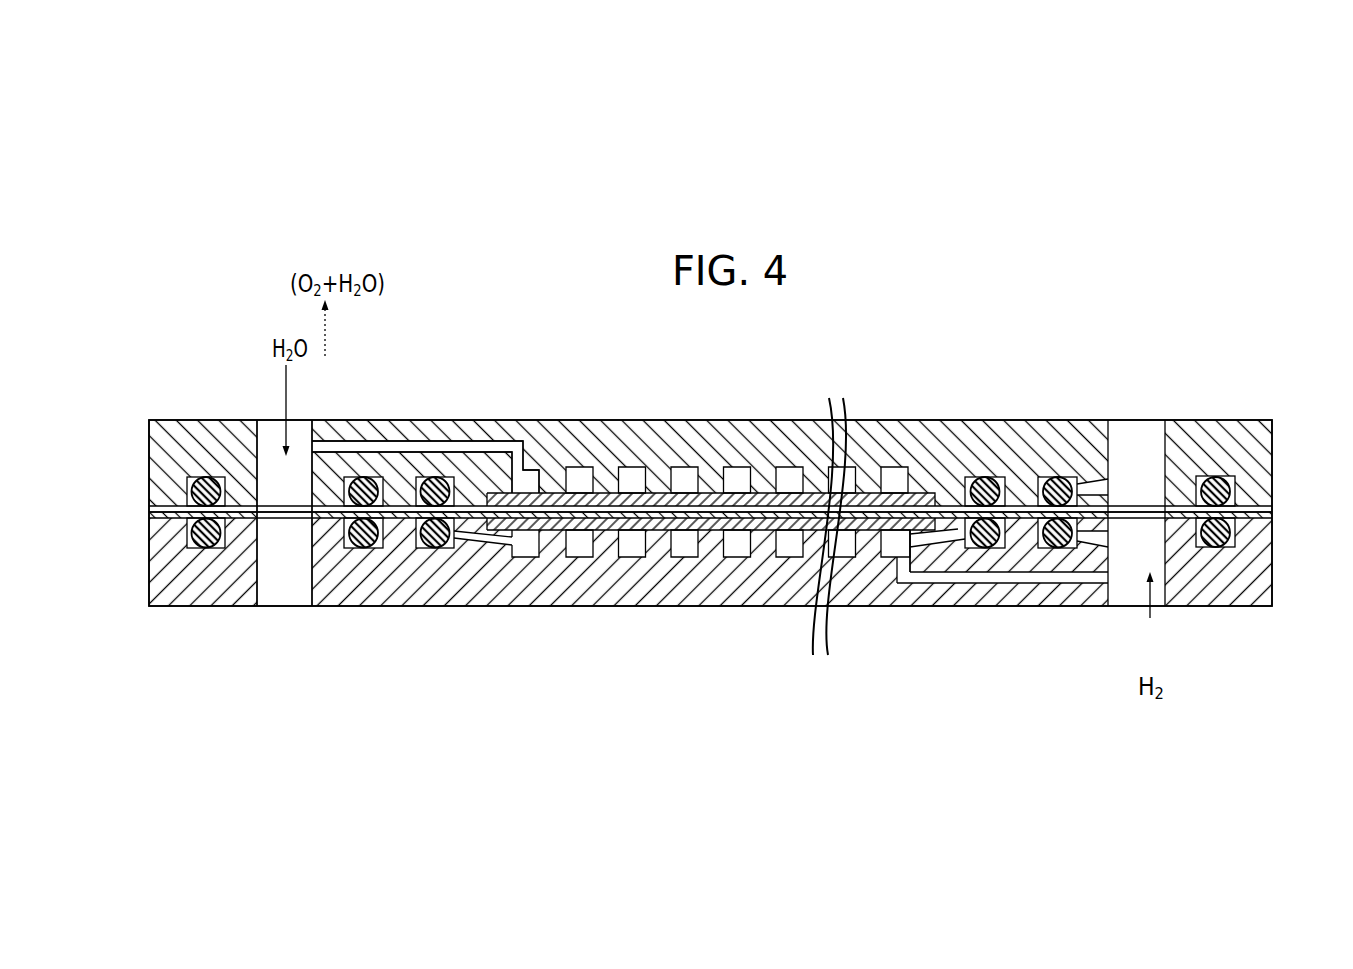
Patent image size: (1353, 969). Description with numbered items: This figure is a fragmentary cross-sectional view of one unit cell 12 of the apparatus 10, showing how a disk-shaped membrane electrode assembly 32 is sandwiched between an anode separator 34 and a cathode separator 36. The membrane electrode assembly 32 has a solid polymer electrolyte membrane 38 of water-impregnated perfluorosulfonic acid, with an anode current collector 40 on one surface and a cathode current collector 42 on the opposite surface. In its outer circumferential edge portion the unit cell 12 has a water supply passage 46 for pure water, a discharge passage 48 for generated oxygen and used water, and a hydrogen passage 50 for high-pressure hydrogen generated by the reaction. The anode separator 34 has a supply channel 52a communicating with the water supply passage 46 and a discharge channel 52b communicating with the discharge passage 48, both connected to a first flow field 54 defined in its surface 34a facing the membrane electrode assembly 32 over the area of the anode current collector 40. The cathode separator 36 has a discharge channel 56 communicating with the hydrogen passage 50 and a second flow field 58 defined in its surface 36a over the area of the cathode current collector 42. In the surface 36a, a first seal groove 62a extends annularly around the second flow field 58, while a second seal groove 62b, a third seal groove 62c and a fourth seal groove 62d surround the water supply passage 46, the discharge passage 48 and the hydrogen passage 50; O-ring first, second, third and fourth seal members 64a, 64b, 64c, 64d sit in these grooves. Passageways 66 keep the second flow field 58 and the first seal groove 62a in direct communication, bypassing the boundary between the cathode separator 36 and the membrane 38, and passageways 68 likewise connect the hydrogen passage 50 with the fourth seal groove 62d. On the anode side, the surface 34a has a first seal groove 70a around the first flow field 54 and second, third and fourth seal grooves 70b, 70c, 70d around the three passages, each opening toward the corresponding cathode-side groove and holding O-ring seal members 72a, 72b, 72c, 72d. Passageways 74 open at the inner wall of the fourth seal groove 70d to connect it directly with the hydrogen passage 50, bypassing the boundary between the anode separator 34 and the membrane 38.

The water electrolysis system 10 is at (1287, 277).
The unit cell 12 is at (1245, 277).
The membrane electrode assembly 32 is at (1282, 512).
The anode separator 34 is at (1278, 438).
The surface of the anode separator 34a is at (980, 475).
The cathode separator 36 is at (1278, 580).
The surface of the cathode separator 36a is at (910, 556).
The solid polymer electrolyte membrane 38 is at (1252, 508).
The anode current collector 40 is at (580, 493).
The cathode current collector 42 is at (573, 558).
The water supply passage 46 is at (284, 597).
The discharge passage 48 is at (304, 571).
The hydrogen passage 50 is at (1146, 450).
The supply channel 52a is at (338, 445).
The discharge channel 52b is at (425, 432).
The first flow field 54 is at (733, 480).
The discharge channel 56 is at (953, 535).
The second flow field 58 is at (735, 570).
The first seal groove 62a is at (434, 548).
The second seal groove 62b is at (204, 548).
The third seal groove 62c is at (305, 590).
The fourth seal groove 62d is at (1043, 548).
The first seal member 64a is at (448, 536).
The second seal member 64b is at (360, 548).
The third seal member 64c is at (375, 588).
The fourth seal member 64d is at (1238, 532).
The passageways 66 is at (945, 578).
The passageways 68 is at (1110, 580).
The first seal groove 70a is at (447, 476).
The second seal groove 70b is at (218, 484).
The third seal groove 70c is at (237, 479).
The fourth seal groove 70d is at (1228, 475).
The first seal member 72a is at (423, 476).
The second seal member 72b is at (186, 493).
The third seal member 72c is at (240, 496).
The fourth seal member 72d is at (1058, 475).
The passageways 74 is at (1122, 478).